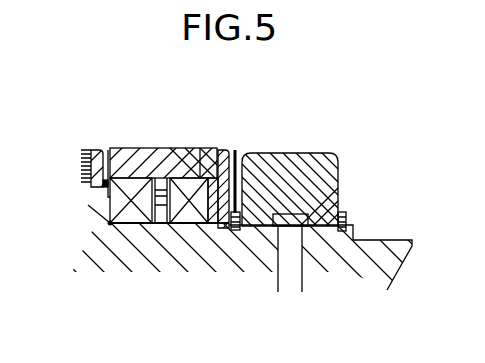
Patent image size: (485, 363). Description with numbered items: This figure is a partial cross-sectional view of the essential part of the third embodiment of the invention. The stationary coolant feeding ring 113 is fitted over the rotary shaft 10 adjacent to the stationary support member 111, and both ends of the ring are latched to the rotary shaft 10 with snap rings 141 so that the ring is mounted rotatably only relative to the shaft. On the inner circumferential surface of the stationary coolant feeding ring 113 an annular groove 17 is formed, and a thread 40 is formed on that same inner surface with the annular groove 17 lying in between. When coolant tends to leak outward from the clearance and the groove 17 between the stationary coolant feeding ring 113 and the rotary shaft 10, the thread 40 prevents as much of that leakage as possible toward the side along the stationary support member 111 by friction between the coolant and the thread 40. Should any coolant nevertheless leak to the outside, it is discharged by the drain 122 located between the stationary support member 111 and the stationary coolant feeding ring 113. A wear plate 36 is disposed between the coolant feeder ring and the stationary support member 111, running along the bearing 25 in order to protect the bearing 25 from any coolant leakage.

The rotary shaft 10 is at (138, 245).
The bearing 25 is at (172, 163).
The stationary support member 111 is at (186, 158).
The wear plate 36 is at (230, 150).
The drain 122 is at (236, 152).
The annular groove 17 is at (320, 154).
The stationary coolant feeding ring 113 is at (330, 178).
The snap rings 141 is at (347, 220).
The thread 40 is at (249, 237).